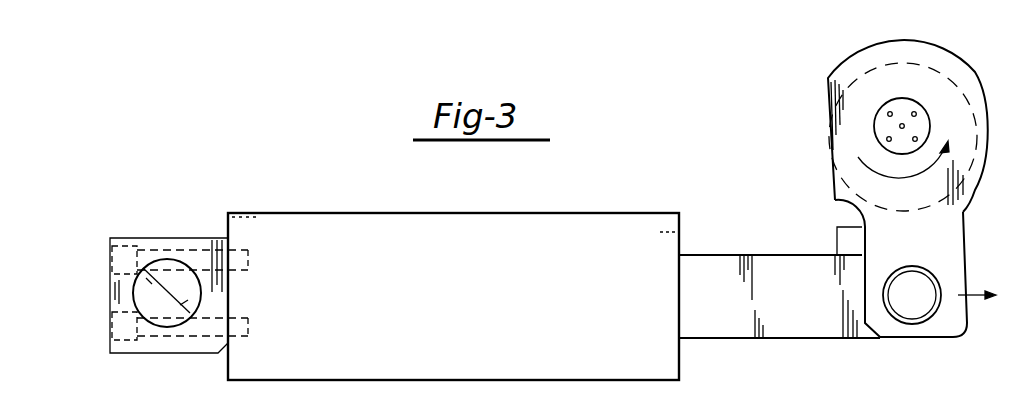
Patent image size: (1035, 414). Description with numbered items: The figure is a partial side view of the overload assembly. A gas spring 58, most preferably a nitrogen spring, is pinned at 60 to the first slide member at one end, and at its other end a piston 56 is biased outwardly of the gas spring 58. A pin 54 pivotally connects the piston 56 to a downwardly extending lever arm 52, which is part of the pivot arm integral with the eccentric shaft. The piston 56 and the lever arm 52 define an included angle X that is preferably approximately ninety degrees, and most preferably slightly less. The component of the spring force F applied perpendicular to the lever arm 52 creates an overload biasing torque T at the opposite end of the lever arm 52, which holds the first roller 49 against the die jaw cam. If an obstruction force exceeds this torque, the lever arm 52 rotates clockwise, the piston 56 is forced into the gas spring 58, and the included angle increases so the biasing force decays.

The first roller 49 is at (973, 148).
The lever arm 52 is at (903, 268).
The pin 54 is at (903, 297).
The piston 56 is at (712, 268).
The gas spring 58 is at (363, 242).
The pin mount 60 is at (140, 302).